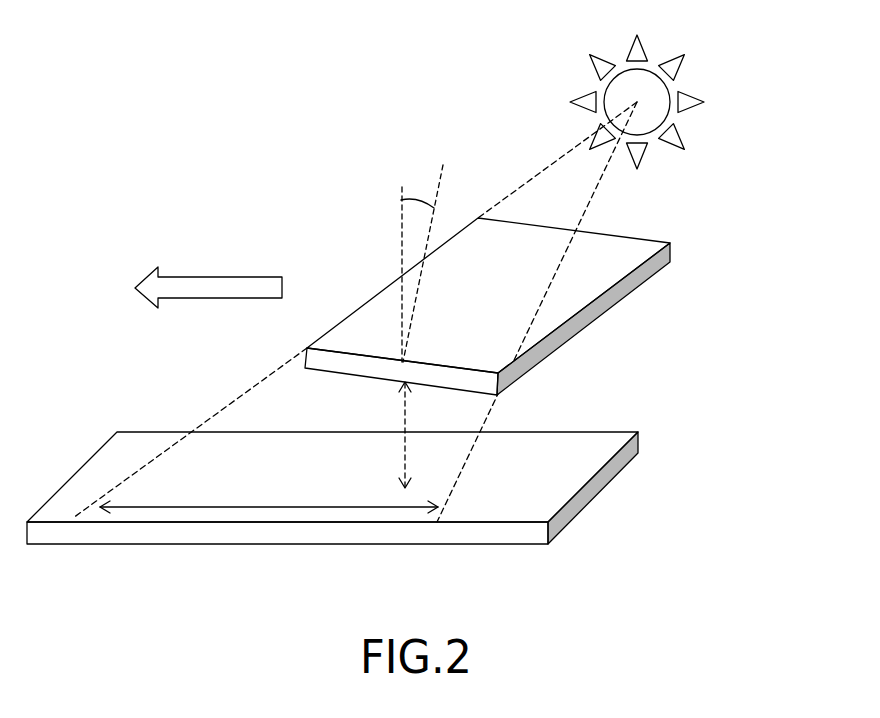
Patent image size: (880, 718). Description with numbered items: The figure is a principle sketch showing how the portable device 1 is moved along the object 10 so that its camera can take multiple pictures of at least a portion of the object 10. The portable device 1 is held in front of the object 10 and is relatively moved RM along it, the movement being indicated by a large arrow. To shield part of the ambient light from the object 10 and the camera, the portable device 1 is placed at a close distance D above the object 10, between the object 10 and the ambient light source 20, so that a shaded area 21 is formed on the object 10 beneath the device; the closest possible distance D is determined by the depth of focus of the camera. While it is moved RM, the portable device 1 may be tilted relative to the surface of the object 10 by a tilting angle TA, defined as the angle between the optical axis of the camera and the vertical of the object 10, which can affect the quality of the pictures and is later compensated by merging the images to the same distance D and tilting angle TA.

The portable device 1 is at (624, 303).
The object 10 is at (620, 482).
The ambient light source 20 is at (684, 120).
The shaded area 21 is at (186, 497).
The relatively moving the portable device along the object RM is at (200, 267).
The tilting angle between portable device and object TA is at (417, 233).
The distance between the portable device and the object D is at (399, 457).